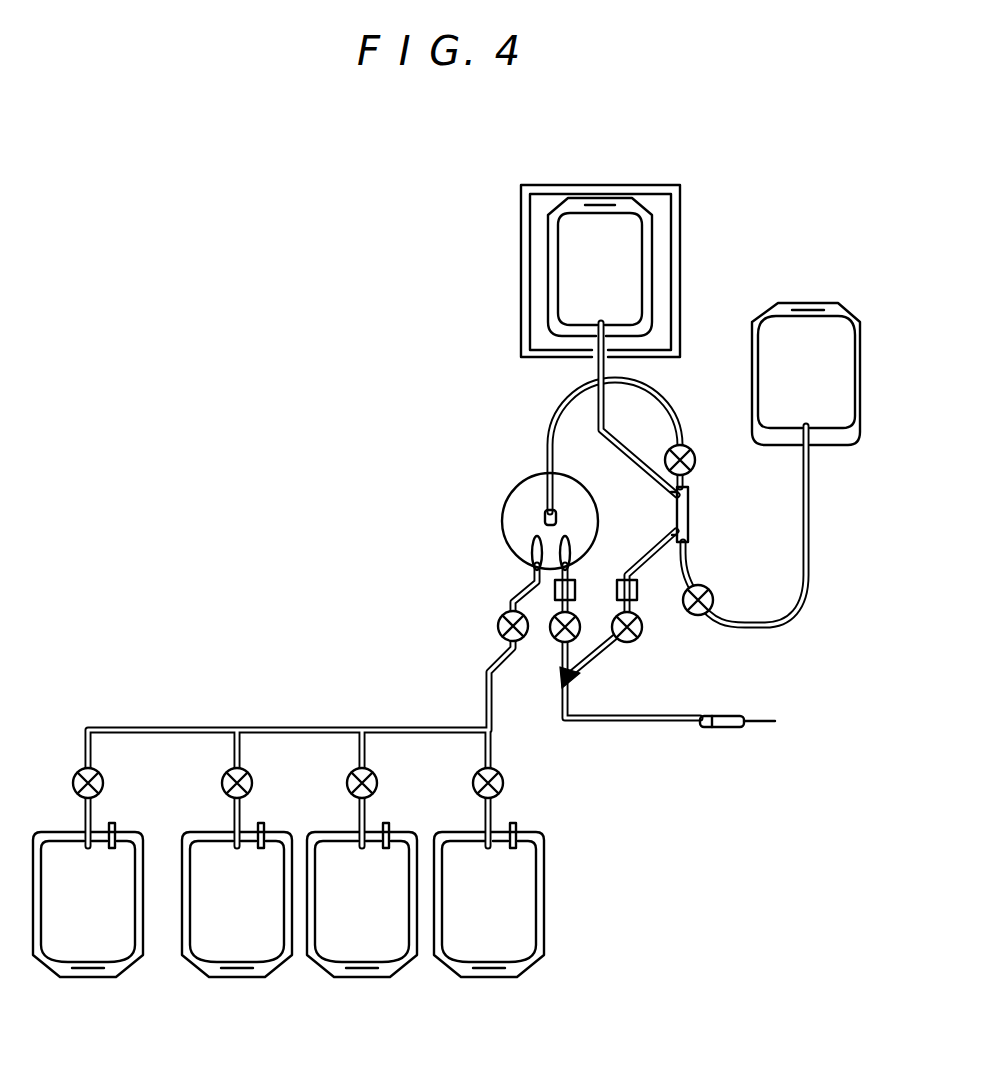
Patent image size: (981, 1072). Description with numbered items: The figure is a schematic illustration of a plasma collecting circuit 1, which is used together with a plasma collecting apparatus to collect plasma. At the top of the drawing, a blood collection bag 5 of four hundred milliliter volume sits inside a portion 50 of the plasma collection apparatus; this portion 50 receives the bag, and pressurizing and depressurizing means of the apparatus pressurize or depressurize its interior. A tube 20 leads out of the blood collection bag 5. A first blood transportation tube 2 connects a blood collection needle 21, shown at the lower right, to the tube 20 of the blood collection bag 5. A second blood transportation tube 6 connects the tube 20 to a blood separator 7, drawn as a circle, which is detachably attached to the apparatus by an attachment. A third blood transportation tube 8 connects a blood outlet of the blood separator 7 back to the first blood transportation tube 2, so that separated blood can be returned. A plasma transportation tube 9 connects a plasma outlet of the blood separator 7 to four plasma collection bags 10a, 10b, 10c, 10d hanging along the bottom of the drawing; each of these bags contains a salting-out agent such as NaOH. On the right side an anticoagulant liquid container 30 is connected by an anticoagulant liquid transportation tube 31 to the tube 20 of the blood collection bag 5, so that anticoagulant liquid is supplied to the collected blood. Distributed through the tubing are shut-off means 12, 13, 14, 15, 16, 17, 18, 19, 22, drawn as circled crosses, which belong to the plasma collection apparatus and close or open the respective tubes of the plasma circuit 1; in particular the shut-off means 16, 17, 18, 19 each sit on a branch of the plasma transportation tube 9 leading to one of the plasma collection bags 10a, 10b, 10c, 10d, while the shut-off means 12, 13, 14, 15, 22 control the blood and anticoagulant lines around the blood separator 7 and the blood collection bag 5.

The plasma collecting circuit 1 is at (382, 505).
The first blood transportation tube 2 is at (657, 548).
The blood collection bag 5 is at (562, 247).
The second blood transportation tube 6 is at (578, 393).
The blood separator 7 is at (508, 522).
The third blood transportation tube 8 is at (553, 604).
The plasma transportation tube 9 is at (486, 672).
The plasma collection bag 10a is at (95, 935).
The plasma collection bag 10b is at (240, 940).
The plasma collection bag 10c is at (372, 945).
The plasma collection bag 10d is at (500, 945).
The shut-off means 12 is at (641, 628).
The shut-off means 13 is at (695, 462).
The shut-off means 14 is at (500, 617).
The shut-off means 15 is at (703, 590).
The shut-off means 16 is at (103, 779).
The shut-off means 17 is at (252, 779).
The shut-off means 18 is at (377, 779).
The shut-off means 19 is at (504, 779).
The tube 20 is at (598, 432).
The blood collection needle 21 is at (735, 728).
The shut-off means 22 is at (553, 636).
The anticoagulant liquid container 30 is at (770, 345).
The anticoagulant liquid transportation tube 31 is at (808, 506).
The portion 50 is at (663, 205).